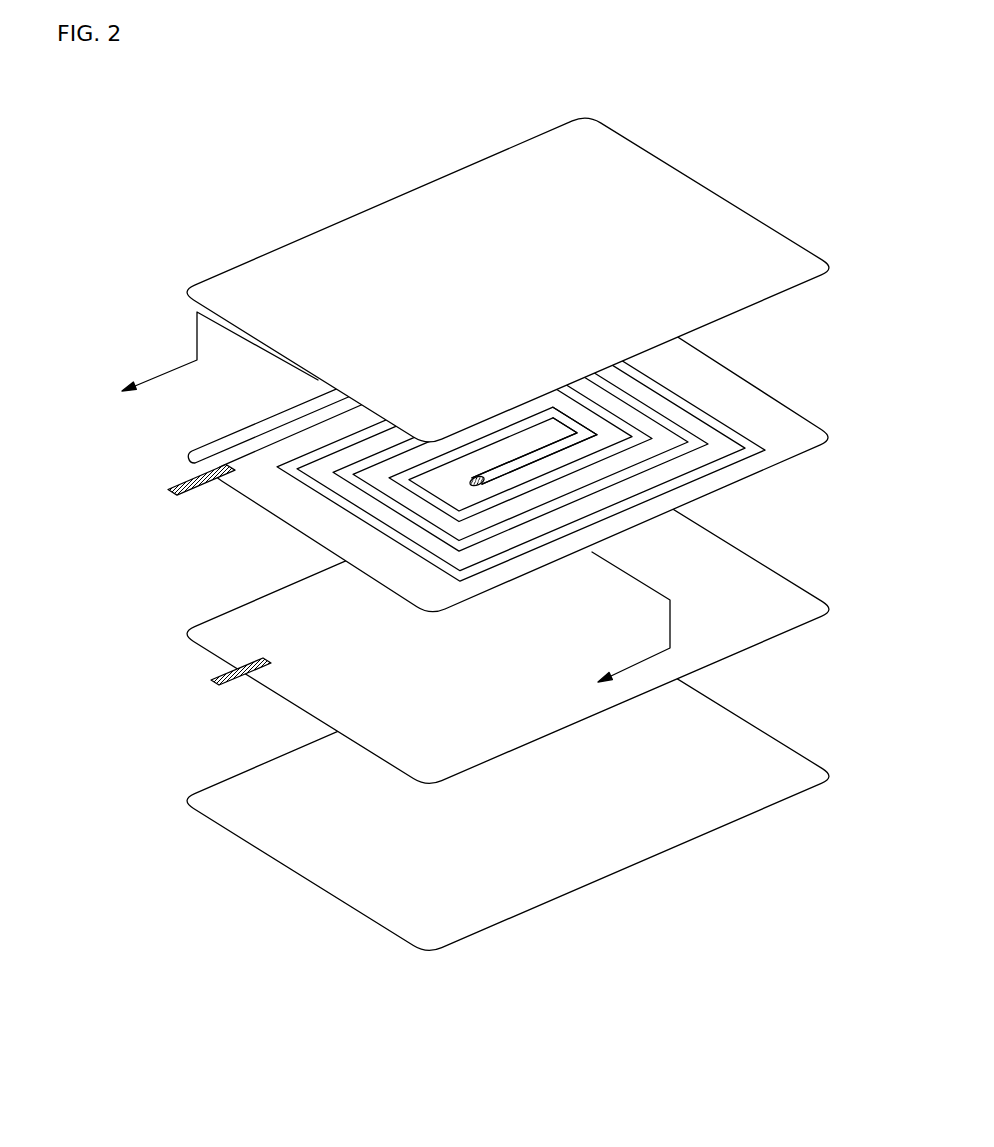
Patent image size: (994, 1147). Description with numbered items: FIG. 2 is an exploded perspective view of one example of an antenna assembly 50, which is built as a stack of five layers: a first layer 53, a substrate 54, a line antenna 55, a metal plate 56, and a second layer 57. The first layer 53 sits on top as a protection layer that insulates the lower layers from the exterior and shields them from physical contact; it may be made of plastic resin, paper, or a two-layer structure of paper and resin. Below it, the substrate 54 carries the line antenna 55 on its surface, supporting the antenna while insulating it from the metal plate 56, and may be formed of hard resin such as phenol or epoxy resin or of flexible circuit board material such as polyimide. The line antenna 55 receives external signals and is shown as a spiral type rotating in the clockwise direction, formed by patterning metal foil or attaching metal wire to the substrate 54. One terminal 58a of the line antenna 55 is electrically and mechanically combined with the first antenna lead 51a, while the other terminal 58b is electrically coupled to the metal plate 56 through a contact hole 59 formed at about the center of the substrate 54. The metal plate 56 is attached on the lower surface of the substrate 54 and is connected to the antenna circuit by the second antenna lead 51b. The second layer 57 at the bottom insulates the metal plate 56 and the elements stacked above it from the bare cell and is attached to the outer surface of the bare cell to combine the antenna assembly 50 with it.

The antenna assembly 50 is at (896, 147).
The first layer 53 is at (698, 193).
The substrate 54 is at (650, 530).
The line antenna 55 is at (682, 480).
The metal plate 56 is at (790, 617).
The second layer 57 is at (595, 870).
The one terminal 58a is at (225, 452).
The other terminal 58b is at (487, 478).
The contact hole 59 is at (483, 484).
The first antenna lead 51a is at (178, 483).
The second antenna lead 51b is at (208, 678).